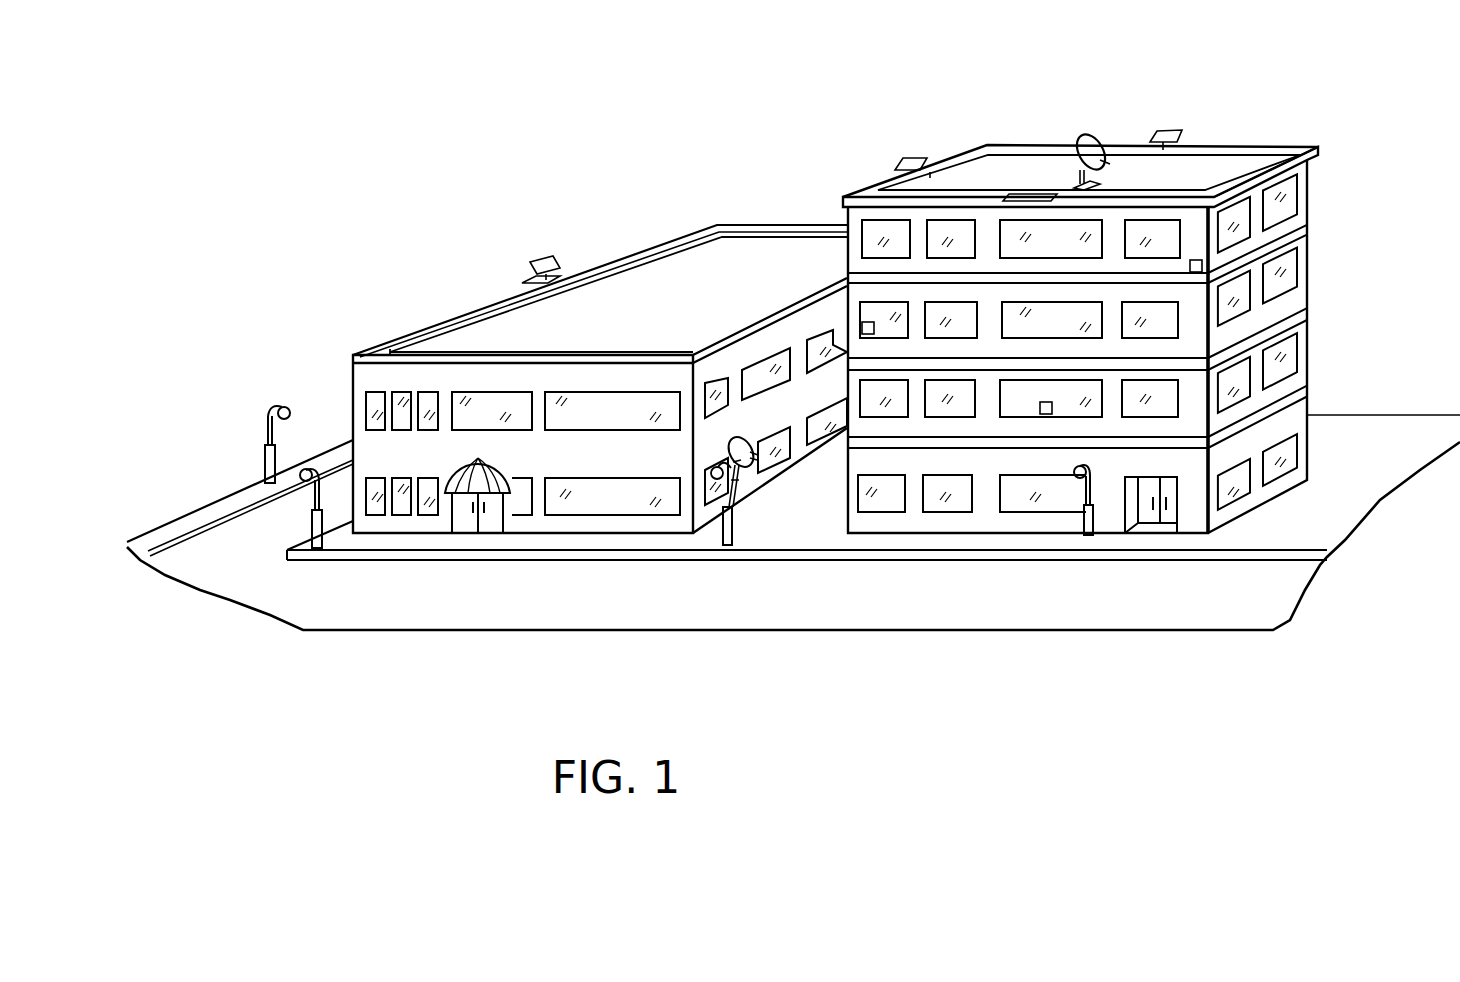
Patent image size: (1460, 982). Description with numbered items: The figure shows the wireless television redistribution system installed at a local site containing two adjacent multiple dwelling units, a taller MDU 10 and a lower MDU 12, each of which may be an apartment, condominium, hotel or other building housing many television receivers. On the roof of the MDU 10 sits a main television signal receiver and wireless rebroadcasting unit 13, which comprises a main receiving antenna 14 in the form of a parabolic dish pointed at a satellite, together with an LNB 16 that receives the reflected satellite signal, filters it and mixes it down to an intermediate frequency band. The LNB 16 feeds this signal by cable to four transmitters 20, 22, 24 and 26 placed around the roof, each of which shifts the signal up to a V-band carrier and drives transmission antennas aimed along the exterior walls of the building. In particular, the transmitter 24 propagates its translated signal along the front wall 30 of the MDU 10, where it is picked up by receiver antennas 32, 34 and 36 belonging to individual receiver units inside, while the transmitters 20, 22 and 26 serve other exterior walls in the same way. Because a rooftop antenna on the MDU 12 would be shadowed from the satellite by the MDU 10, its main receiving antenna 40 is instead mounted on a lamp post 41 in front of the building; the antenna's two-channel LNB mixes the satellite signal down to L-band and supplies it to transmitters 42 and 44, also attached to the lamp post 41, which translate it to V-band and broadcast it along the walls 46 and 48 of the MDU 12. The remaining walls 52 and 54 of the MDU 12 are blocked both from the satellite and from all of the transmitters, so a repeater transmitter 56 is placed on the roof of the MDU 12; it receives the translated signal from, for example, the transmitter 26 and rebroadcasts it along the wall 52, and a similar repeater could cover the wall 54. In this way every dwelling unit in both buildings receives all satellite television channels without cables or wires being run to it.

The MDU 10 is at (1121, 355).
The MDU 12 is at (600, 325).
The main television signal receiver and wireless rebroadcasting unit 13 is at (1131, 114).
The main receiving antenna 14 is at (1100, 147).
The LNB 16 is at (1095, 180).
The transmitter 20 is at (1168, 135).
The transmitter 22 is at (1262, 180).
The transmitter 24 is at (1028, 195).
The transmitter 26 is at (905, 157).
The front wall 30 is at (1187, 518).
The receiver antenna 32 is at (1205, 266).
The receiver antenna 34 is at (868, 335).
The receiver antenna 36 is at (1046, 415).
The main receiving antenna 40 is at (752, 460).
The lamp post 41 is at (727, 540).
The transmitter 42 is at (733, 465).
The transmitter 44 is at (746, 470).
The wall 46 is at (590, 471).
The wall 48 is at (775, 418).
The wall 52 is at (440, 348).
The wall 54 is at (763, 257).
The repeater transmitter 56 is at (545, 258).